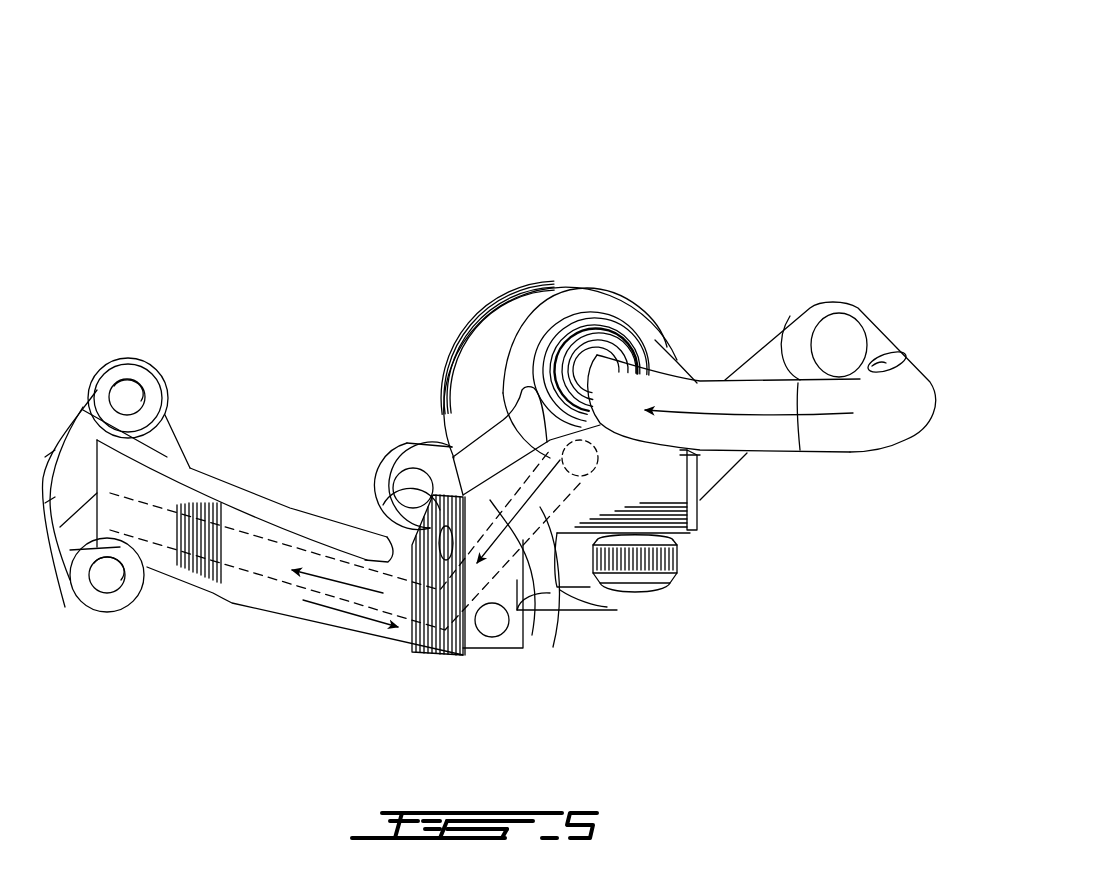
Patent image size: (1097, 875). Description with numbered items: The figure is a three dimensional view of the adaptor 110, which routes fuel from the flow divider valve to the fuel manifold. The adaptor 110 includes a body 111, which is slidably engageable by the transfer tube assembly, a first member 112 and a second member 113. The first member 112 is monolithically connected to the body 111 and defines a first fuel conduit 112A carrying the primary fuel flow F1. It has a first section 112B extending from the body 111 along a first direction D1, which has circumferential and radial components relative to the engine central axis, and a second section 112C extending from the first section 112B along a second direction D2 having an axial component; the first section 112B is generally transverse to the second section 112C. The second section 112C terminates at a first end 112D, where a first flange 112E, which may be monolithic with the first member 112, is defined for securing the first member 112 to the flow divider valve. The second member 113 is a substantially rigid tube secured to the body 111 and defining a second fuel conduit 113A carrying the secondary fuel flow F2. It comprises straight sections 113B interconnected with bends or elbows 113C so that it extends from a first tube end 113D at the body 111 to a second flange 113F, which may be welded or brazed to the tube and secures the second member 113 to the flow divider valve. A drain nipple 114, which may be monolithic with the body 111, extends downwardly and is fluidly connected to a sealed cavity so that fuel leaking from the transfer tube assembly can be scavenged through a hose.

The adaptor 110 is at (583, 114).
The body 111 is at (490, 367).
The first member 112 is at (266, 510).
The first fuel conduit 112A is at (242, 578).
The first section 112B is at (498, 585).
The second section 112C is at (275, 597).
The first end 112D is at (63, 557).
The first flange 112E is at (63, 477).
The second member 113 is at (857, 400).
The second fuel conduit 113A is at (716, 418).
The straight sections 113B is at (608, 372).
The bends or elbows 113C is at (808, 436).
The first tube end 113D is at (613, 377).
The second flange 113F is at (403, 472).
The drain nipple 114 is at (655, 570).
The first direction D1 is at (528, 600).
The second direction D2 is at (332, 580).
The primary fuel flow F1 is at (368, 625).
The secondary fuel flow F2 is at (743, 418).